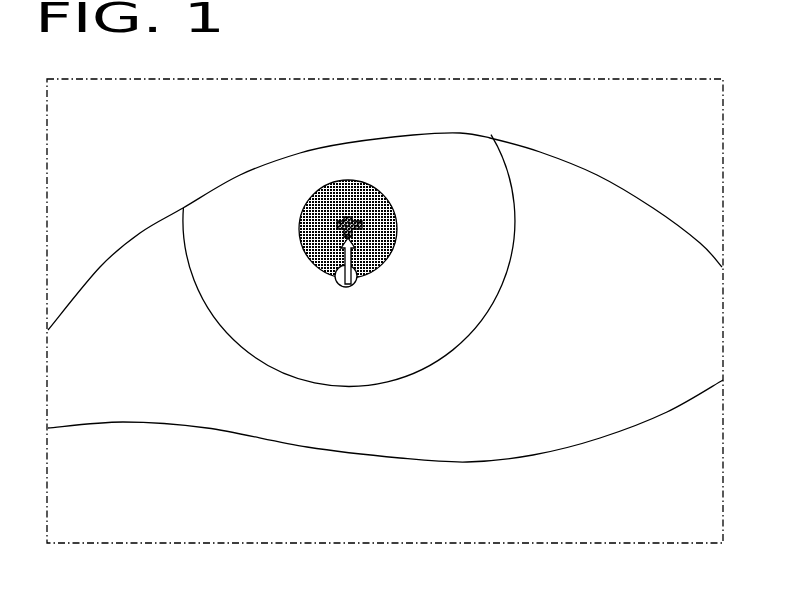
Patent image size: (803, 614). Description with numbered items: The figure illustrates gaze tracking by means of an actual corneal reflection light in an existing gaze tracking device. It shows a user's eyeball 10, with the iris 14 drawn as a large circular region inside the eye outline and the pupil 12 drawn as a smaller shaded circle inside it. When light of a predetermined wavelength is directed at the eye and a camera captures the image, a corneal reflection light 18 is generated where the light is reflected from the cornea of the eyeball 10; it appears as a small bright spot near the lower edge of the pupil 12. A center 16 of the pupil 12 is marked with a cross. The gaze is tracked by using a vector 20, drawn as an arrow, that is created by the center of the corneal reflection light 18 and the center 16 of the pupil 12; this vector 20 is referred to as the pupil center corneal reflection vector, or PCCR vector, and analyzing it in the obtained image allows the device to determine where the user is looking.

The eyeball 10 is at (600, 176).
The pupil 12 is at (375, 190).
The iris 14 is at (517, 223).
The center of the pupil 16 is at (352, 223).
The corneal reflection light 18 is at (357, 283).
The pupil center corneal reflection vector 20 is at (352, 253).